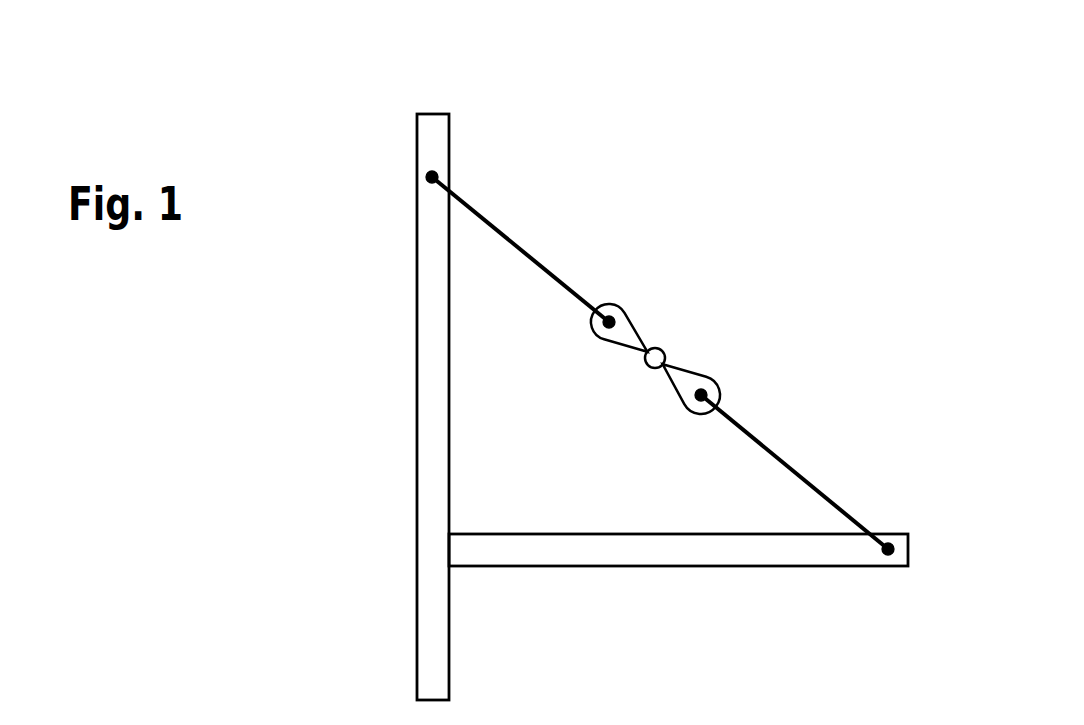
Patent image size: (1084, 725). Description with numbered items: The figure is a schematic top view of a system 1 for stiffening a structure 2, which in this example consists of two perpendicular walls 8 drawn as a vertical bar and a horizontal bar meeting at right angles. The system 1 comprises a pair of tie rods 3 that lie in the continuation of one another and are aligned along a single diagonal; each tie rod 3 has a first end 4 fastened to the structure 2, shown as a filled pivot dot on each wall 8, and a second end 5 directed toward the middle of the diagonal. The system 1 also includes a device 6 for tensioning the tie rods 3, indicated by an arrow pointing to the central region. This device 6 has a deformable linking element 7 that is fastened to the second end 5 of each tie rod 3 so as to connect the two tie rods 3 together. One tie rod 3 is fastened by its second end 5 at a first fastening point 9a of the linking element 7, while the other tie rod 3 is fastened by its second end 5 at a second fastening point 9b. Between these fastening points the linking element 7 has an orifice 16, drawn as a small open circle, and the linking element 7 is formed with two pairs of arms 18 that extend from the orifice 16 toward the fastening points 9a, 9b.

The system 1 is at (738, 252).
The structure 2 is at (433, 410).
The tie rod 3 is at (495, 222).
The first end 4 is at (432, 172).
The second end 5 is at (585, 302).
The device for tensioning the tie rods 6 is at (622, 398).
The deformable linking element 7 is at (678, 360).
The wall 8 is at (433, 242).
The first fastening point 9a is at (620, 308).
The second fastening point 9b is at (705, 390).
The orifice 16 is at (645, 365).
The arms 18 is at (637, 320).